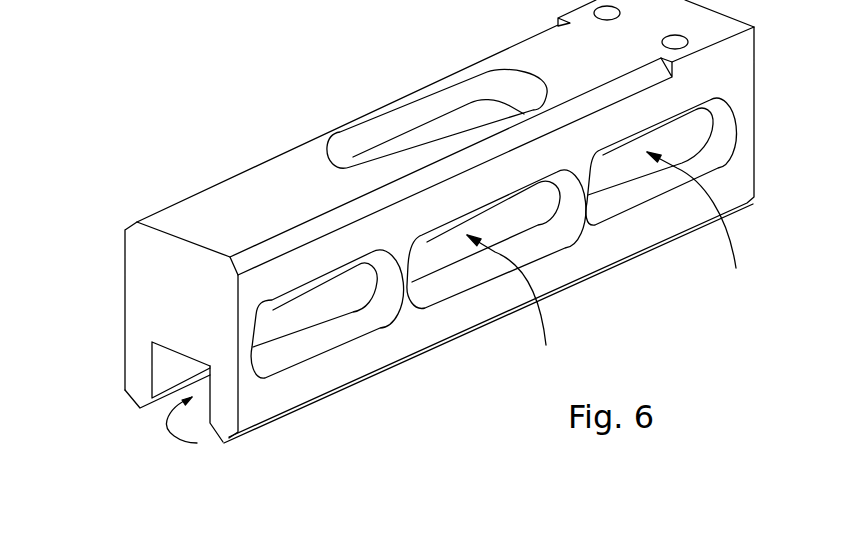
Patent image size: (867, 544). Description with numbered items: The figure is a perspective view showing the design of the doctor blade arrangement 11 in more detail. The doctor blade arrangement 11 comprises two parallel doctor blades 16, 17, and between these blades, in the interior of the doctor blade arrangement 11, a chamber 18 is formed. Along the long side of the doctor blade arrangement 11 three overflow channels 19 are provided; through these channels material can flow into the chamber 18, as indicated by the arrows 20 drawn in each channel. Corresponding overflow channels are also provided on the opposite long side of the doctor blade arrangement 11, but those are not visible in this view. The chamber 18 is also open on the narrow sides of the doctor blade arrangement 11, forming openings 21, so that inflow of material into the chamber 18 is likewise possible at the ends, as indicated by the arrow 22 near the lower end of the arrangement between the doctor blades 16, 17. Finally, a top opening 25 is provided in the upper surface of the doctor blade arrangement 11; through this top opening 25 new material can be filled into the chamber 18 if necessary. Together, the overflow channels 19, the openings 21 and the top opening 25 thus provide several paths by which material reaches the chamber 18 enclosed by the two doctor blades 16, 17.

The doctor blade arrangement 11 is at (270, 198).
The top opening 25 is at (423, 117).
The overflow channels 19 is at (303, 347).
The arrows 20 is at (315, 305).
The chamber 18 is at (512, 213).
The openings 21 is at (172, 372).
The arrow 22 is at (180, 437).
The doctor blade 16 is at (222, 423).
The doctor blade 17 is at (143, 388).